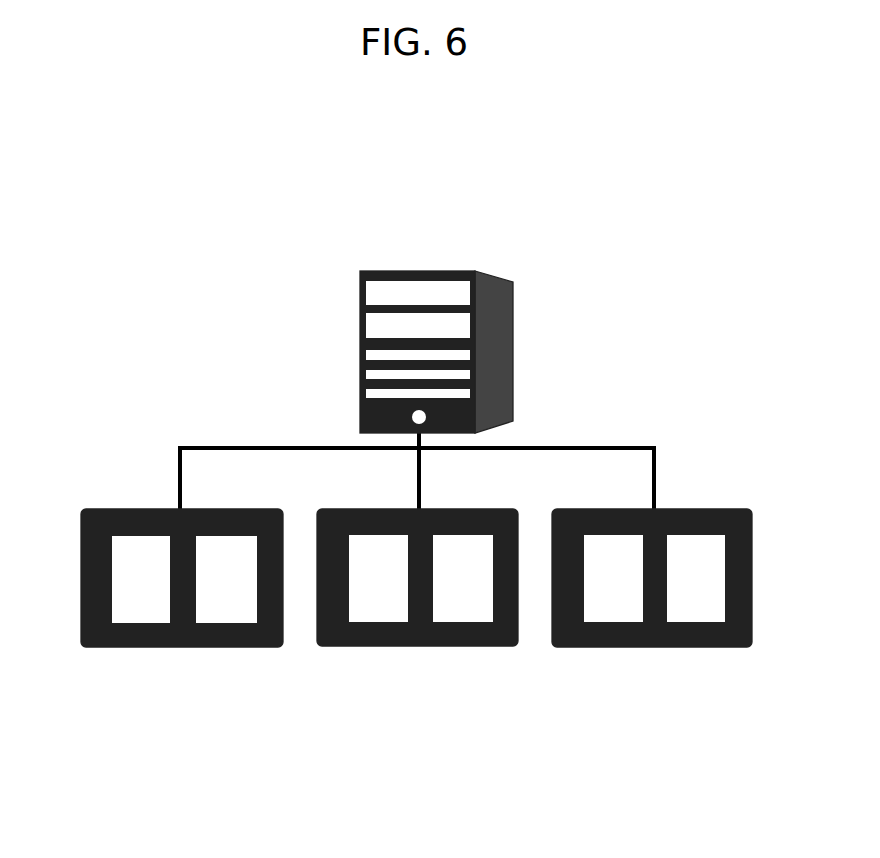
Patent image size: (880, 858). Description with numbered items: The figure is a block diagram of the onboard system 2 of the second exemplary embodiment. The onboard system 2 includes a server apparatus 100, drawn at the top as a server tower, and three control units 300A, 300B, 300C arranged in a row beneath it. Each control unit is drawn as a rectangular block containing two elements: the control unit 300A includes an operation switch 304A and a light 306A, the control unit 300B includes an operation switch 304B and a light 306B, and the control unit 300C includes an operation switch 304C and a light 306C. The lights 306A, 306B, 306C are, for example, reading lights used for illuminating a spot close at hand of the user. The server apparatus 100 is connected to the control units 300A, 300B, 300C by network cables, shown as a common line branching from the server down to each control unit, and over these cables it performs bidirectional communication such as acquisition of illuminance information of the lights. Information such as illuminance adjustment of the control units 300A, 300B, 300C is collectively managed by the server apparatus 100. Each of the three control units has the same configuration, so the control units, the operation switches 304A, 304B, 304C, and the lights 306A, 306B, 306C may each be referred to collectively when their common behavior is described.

The onboard system 2 is at (665, 283).
The server apparatus 100 is at (362, 312).
The control unit 300A is at (103, 647).
The control unit 300B is at (345, 646).
The control unit 300C is at (577, 647).
The operation switch 304A is at (133, 610).
The light 306A is at (232, 610).
The operation switch 304B is at (368, 608).
The light 306B is at (460, 608).
The operation switch 304C is at (603, 607).
The light 306C is at (695, 607).